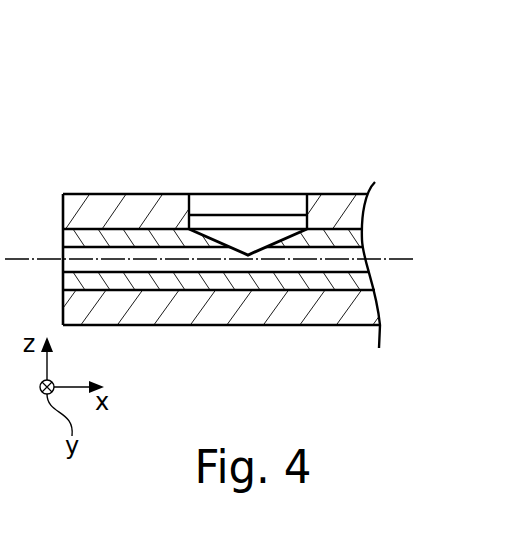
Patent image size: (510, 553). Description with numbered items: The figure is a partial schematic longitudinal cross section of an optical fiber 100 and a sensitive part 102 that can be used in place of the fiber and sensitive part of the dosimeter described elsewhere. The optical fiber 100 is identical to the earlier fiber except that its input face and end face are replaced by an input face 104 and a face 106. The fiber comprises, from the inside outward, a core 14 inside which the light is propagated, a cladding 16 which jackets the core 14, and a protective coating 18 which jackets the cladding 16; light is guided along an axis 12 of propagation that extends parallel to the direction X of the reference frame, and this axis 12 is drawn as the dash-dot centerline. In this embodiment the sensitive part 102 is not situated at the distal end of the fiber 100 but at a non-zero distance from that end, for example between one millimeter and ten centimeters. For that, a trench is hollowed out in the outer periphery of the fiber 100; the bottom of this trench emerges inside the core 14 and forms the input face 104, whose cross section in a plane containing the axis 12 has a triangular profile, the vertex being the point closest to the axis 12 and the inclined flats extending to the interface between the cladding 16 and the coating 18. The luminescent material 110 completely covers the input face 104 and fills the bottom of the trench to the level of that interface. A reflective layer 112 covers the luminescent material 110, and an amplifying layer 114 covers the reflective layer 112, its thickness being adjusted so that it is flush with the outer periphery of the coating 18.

The axis of propagation 12 is at (371, 259).
The core 14 is at (228, 254).
The cladding 16 is at (119, 232).
The protective coating 18 is at (73, 207).
The optical fiber 100 is at (32, 91).
The sensitive part 102 is at (195, 91).
The input face 104 is at (175, 253).
The face 106 is at (306, 234).
The luminescent material 110 is at (208, 232).
The reflective layer 112 is at (248, 221).
The amplifying layer 114 is at (283, 210).